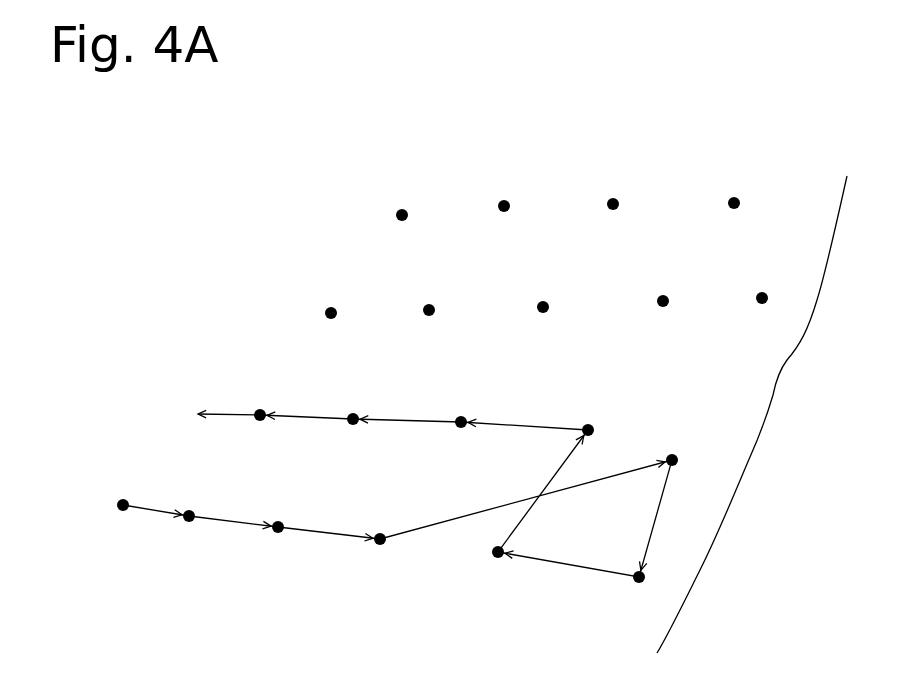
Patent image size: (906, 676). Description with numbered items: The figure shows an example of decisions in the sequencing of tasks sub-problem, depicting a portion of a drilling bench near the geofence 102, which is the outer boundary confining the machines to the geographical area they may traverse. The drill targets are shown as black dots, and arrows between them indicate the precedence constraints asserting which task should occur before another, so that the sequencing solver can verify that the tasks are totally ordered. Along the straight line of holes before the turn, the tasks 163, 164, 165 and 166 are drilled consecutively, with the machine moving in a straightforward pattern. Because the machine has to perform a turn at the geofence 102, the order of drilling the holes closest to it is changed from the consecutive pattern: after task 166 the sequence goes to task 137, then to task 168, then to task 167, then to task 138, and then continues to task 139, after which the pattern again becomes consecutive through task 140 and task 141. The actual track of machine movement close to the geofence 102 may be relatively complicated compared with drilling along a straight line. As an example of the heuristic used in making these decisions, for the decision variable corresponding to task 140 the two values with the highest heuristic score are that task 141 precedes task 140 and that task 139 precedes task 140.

The outer boundary 102 is at (773, 395).
The task 137 is at (695, 453).
The task 138 is at (602, 419).
The task 139 is at (460, 406).
The task 140 is at (362, 405).
The task 141 is at (265, 403).
The task 163 is at (121, 510).
The task 164 is at (188, 522).
The task 165 is at (277, 533).
The task 166 is at (379, 545).
The task 167 is at (492, 567).
The task 168 is at (637, 592).